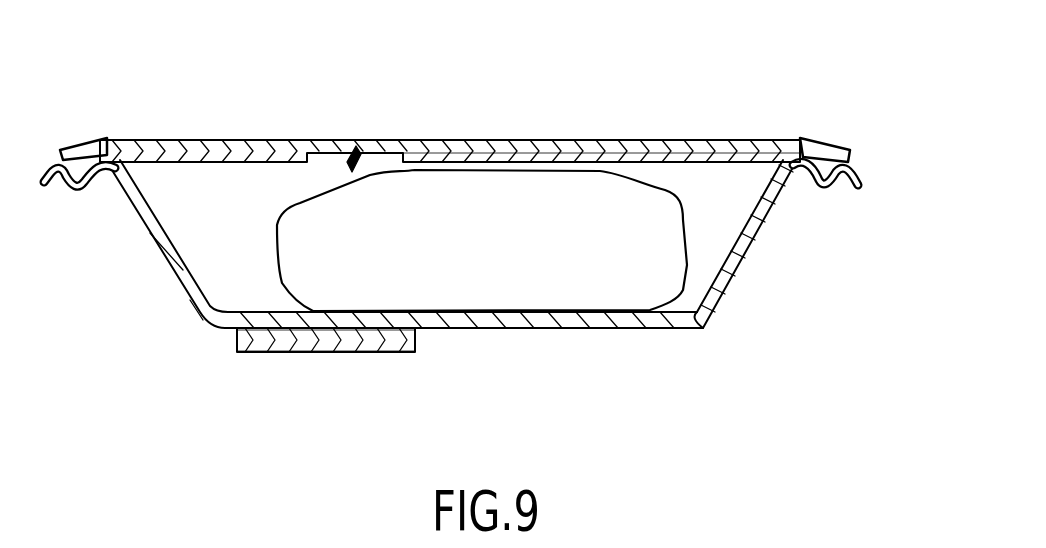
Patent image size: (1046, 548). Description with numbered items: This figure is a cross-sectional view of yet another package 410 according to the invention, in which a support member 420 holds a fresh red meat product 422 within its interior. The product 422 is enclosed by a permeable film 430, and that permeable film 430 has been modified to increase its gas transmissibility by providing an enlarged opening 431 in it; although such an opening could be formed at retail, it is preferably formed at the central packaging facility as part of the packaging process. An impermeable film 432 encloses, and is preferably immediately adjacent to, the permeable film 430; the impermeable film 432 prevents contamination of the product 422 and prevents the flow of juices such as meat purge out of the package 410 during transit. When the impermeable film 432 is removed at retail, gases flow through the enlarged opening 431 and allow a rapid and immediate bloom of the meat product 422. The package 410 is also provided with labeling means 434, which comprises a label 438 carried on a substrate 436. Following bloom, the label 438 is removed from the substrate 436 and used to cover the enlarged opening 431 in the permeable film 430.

The packaging assembly 410 is at (808, 99).
The container 420 is at (781, 263).
The product 422 is at (605, 300).
The permeable film 430 is at (676, 153).
The enlarged opening 431 is at (362, 140).
The impermeable film 432 is at (487, 140).
The labeling means 434 is at (234, 342).
The substrate 436 is at (413, 332).
The label 438 is at (360, 332).